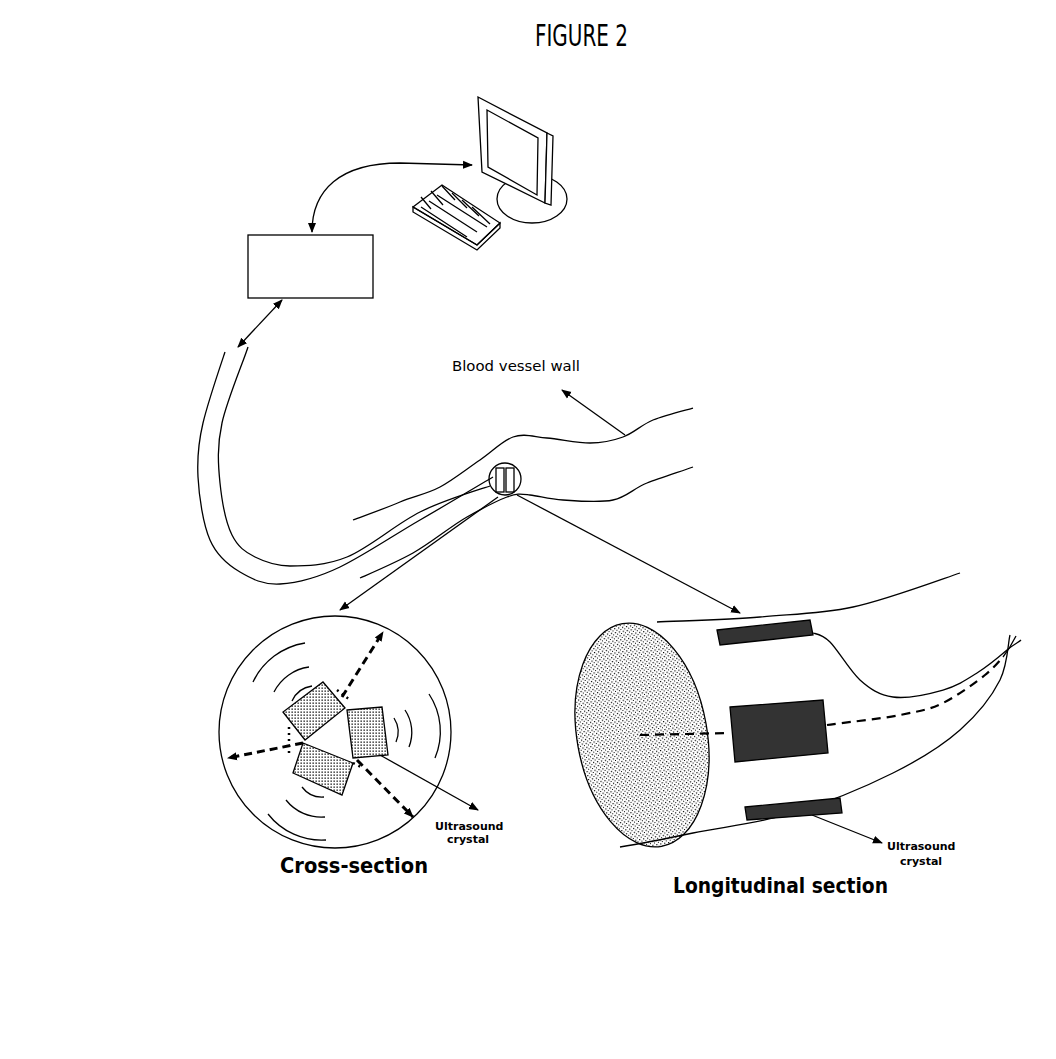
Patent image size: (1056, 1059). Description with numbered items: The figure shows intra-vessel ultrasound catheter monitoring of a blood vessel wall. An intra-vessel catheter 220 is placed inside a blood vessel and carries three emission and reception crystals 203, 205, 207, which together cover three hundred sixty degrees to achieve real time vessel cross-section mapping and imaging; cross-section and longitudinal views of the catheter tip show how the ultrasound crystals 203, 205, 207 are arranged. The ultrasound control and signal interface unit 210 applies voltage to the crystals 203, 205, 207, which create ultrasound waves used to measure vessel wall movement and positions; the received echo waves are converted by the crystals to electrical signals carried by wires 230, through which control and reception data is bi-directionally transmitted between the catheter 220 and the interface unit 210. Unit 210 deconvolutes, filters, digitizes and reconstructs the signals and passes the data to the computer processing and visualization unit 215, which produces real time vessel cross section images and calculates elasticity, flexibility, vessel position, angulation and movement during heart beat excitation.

The ultrasound emission and reception crystal 203 is at (283, 710).
The ultrasound emission and reception crystal 205 is at (300, 787).
The ultrasound emission and reception crystal 207 is at (370, 720).
The ultrasound control and signal interface unit 210 is at (250, 237).
The computer processing and visualization unit 215 is at (477, 128).
The intra-vessel catheter 220 is at (430, 508).
The wires 230 is at (1008, 673).